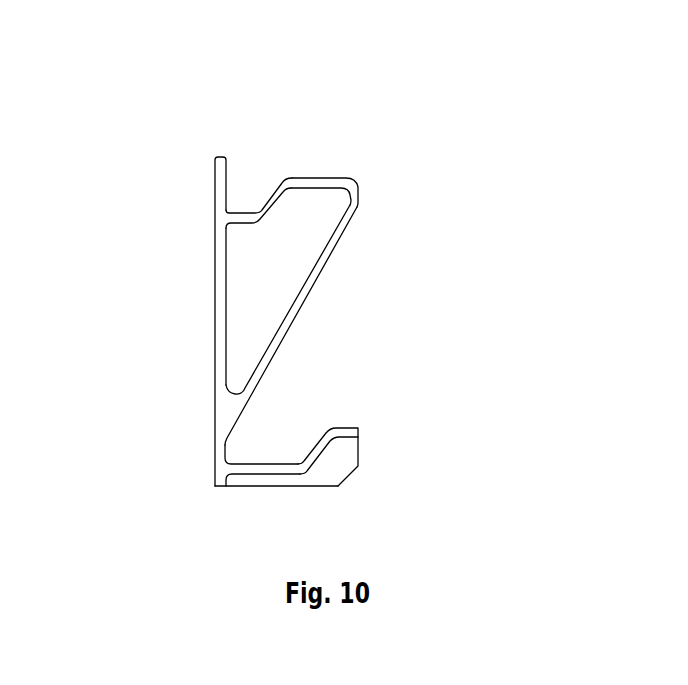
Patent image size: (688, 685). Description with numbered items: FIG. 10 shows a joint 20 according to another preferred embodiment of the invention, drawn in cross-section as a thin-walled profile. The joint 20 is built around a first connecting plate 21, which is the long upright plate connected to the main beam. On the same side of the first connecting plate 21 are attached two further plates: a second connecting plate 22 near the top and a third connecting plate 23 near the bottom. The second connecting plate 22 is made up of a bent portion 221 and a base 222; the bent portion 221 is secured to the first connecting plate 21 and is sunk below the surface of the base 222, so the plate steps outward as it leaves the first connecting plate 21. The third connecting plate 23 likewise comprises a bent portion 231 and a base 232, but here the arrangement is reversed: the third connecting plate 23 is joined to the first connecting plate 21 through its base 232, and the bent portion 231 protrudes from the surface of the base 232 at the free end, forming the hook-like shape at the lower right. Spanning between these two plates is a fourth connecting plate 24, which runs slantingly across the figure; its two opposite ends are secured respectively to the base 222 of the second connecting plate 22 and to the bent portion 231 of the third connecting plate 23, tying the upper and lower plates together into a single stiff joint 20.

The joint 20 is at (190, 406).
The first connecting plate 21 is at (215, 248).
The second connecting plate 22 is at (383, 92).
The bent portion 221 is at (268, 198).
The base 222 is at (325, 178).
The third connecting plate 23 is at (493, 333).
The bent portion 231 is at (315, 447).
The base 232 is at (270, 461).
The fourth connecting plate 24 is at (317, 270).